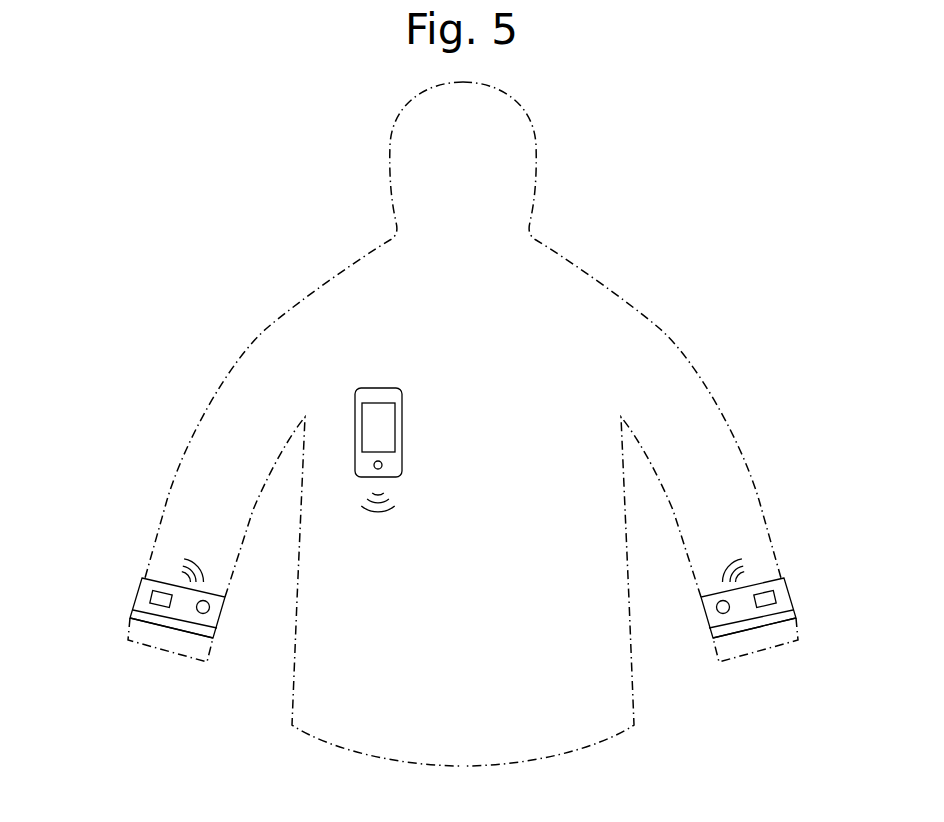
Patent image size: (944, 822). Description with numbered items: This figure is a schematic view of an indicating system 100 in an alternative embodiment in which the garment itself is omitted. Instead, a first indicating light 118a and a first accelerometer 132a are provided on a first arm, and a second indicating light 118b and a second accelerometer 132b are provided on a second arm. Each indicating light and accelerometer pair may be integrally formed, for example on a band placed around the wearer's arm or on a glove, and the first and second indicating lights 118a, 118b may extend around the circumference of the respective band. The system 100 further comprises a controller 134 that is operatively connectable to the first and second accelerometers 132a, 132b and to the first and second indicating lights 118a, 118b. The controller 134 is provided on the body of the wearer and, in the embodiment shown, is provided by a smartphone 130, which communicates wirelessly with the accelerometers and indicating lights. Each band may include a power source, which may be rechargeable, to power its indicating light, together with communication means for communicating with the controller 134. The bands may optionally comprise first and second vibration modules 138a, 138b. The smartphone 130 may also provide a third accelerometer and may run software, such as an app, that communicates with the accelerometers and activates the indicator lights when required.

The indicating system 100 is at (207, 315).
The first indicating light 118a is at (152, 622).
The second indicating light 118b is at (774, 622).
The first accelerometer 132a is at (150, 598).
The second accelerometer 132b is at (776, 598).
The first vibration module 138a is at (200, 614).
The second vibration module 138b is at (726, 614).
The smartphone 130 is at (388, 442).
The controller 134 is at (388, 410).